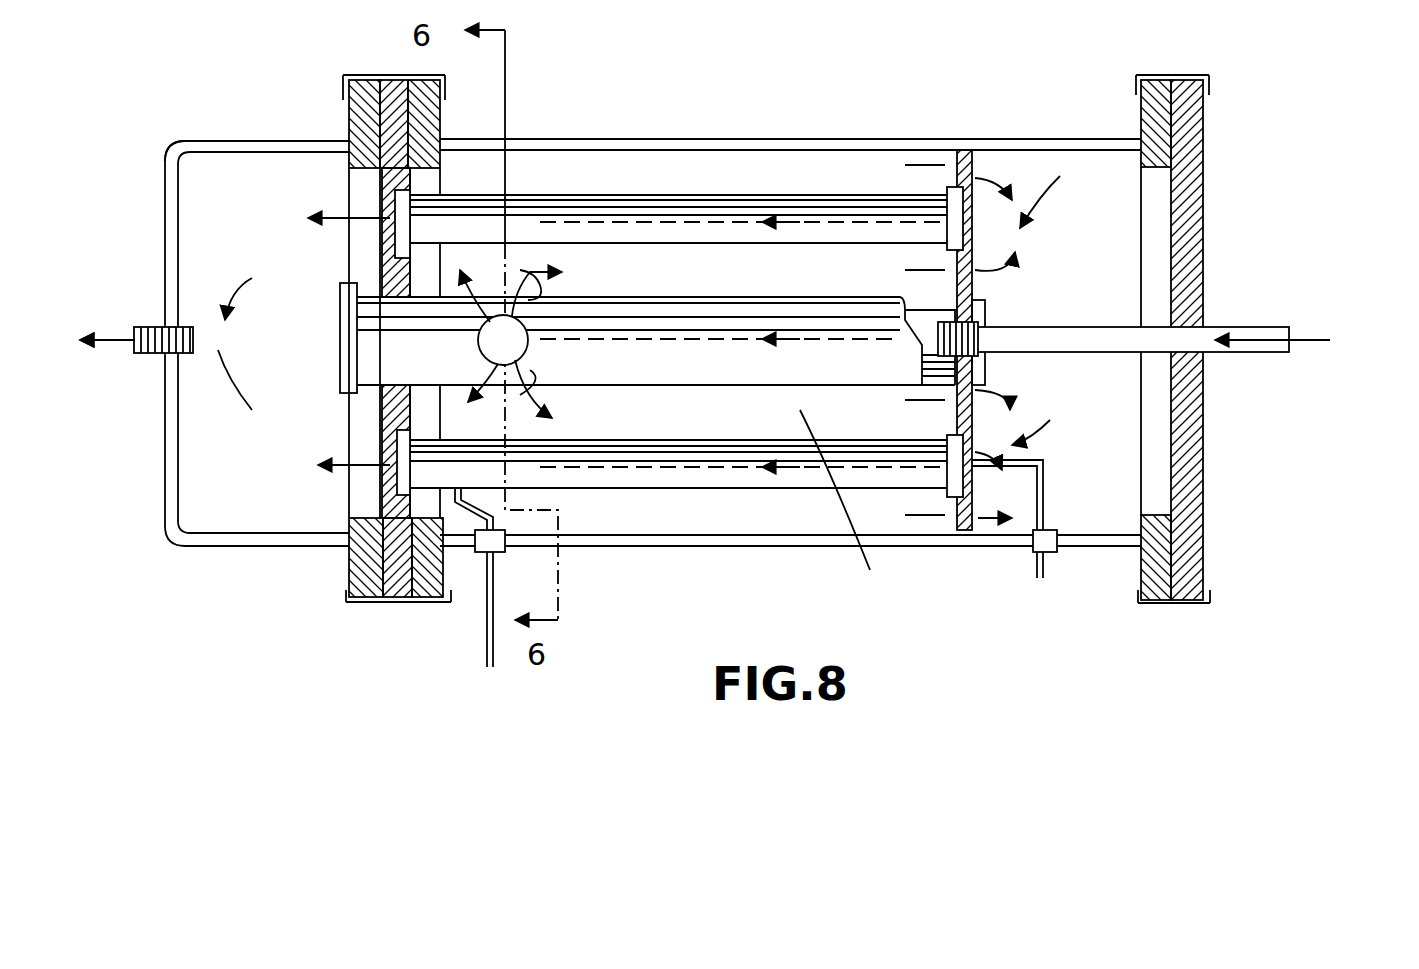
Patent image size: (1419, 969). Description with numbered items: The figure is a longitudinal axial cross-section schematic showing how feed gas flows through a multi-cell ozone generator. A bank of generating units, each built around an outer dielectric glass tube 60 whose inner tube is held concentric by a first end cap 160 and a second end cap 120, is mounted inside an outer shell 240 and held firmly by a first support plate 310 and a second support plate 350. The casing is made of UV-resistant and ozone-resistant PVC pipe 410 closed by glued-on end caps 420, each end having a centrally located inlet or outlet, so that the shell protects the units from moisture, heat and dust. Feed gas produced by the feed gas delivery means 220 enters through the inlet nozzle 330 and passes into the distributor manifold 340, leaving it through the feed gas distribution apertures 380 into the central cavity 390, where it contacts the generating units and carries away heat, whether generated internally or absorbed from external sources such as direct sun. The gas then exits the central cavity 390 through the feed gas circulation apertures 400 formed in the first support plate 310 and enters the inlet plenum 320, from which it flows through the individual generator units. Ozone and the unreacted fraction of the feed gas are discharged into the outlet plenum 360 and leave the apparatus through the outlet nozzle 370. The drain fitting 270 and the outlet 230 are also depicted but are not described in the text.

The outer dielectric glass tube 60 is at (790, 205).
The second end cap 120 is at (385, 480).
The first end cap 160 is at (945, 490).
The feed gas delivery means 220 is at (1300, 338).
The outlet 230 is at (112, 330).
The outer shell 240 is at (660, 139).
The drain fitting 270 is at (485, 618).
The first support plate 310 is at (960, 165).
The inlet plenum 320 is at (1096, 178).
The inlet nozzle 330 is at (1218, 327).
The distributor manifold 340 is at (688, 365).
The second support plate 350 is at (365, 602).
The outlet plenum 360 is at (195, 478).
The outlet nozzle 370 is at (152, 357).
The feed gas distribution apertures 380 is at (480, 350).
The central cavity 390 is at (860, 507).
The feed gas circulation apertures 400 is at (1010, 178).
The PVC pipe 410 is at (596, 139).
The end caps 420 is at (250, 148).